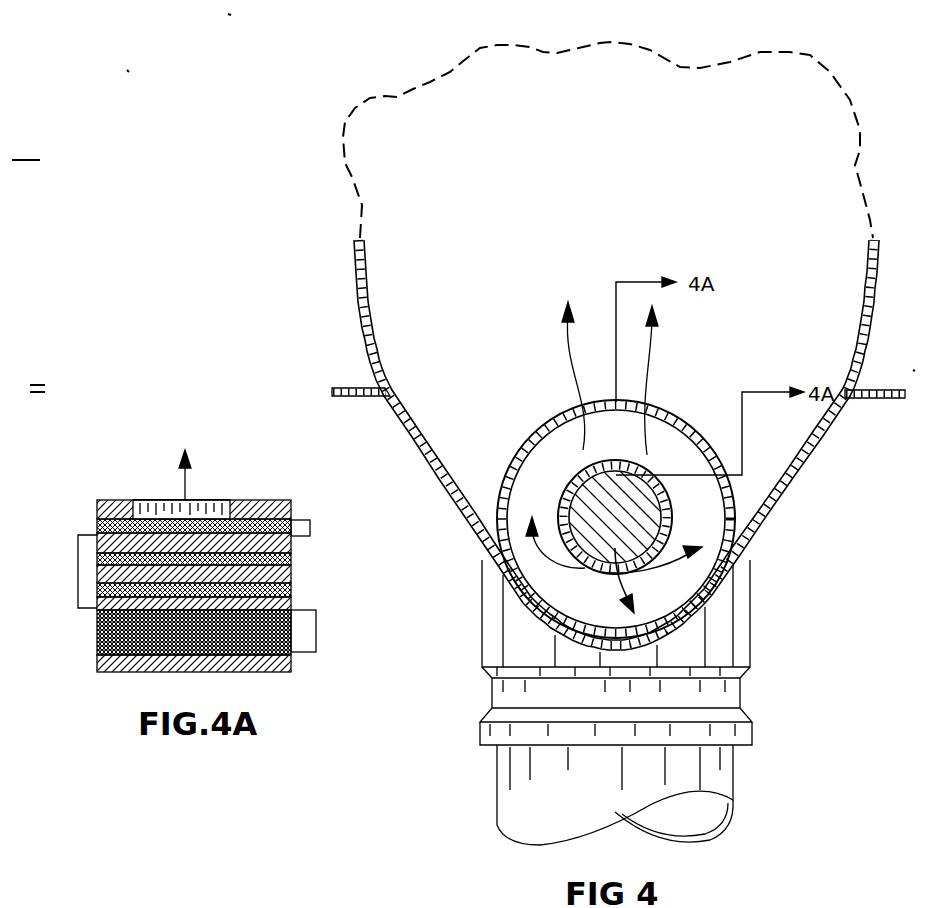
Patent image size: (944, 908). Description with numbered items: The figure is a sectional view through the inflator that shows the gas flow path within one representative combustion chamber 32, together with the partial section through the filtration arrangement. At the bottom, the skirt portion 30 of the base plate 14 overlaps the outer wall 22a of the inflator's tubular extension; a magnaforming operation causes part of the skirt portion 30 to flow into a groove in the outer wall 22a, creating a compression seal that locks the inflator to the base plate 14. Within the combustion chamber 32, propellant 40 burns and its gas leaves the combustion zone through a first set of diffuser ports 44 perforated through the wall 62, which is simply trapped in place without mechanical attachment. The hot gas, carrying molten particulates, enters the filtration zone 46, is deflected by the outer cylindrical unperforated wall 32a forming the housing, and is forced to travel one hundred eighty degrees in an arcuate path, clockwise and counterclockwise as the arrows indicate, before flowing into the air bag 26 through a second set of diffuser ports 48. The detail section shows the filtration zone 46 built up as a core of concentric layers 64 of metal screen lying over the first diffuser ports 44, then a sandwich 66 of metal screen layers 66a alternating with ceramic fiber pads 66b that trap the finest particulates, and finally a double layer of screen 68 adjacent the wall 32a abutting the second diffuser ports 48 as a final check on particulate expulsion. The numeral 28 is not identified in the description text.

In FIG. 4, the base plate 14 is at (800, 500).
In FIG. 4, the outer wall 22a is at (705, 795).
In FIG. 4, the air bag 26 is at (865, 327).
In FIG. 4, the shelf flange 28 is at (364, 390).
In FIG. 4, the skirt portion 30 is at (735, 650).
In FIG. 4, the combustion chamber 32 is at (585, 470).
In FIG. 4, the outer cylindrical unperforated wall 32a is at (553, 425).
In FIG. 4A, the outer cylindrical unperforated wall 32a is at (150, 514).
In FIG. 4, the propellant 40 is at (585, 518).
In FIG. 4, the first set of diffuser ports 44 is at (613, 560).
In FIG. 4, the filtration zone 46 is at (677, 472).
In FIG. 4, the second set of diffuser ports 48 is at (650, 418).
In FIG. 4A, the second set of diffuser ports 48 is at (210, 505).
In FIG. 4, the wall 62 is at (568, 506).
In FIG. 4A, the wall 62 is at (120, 664).
In FIG. 4A, the concentric layers of metal screen 64 is at (316, 631).
In FIG. 4A, the sandwich 66 is at (78, 572).
In FIG. 4A, the metal screen layers 66a is at (292, 558).
In FIG. 4A, the ceramic fiber pad 66b is at (292, 543).
In FIG. 4A, the double layer of 28 mesh screen 68 is at (312, 526).